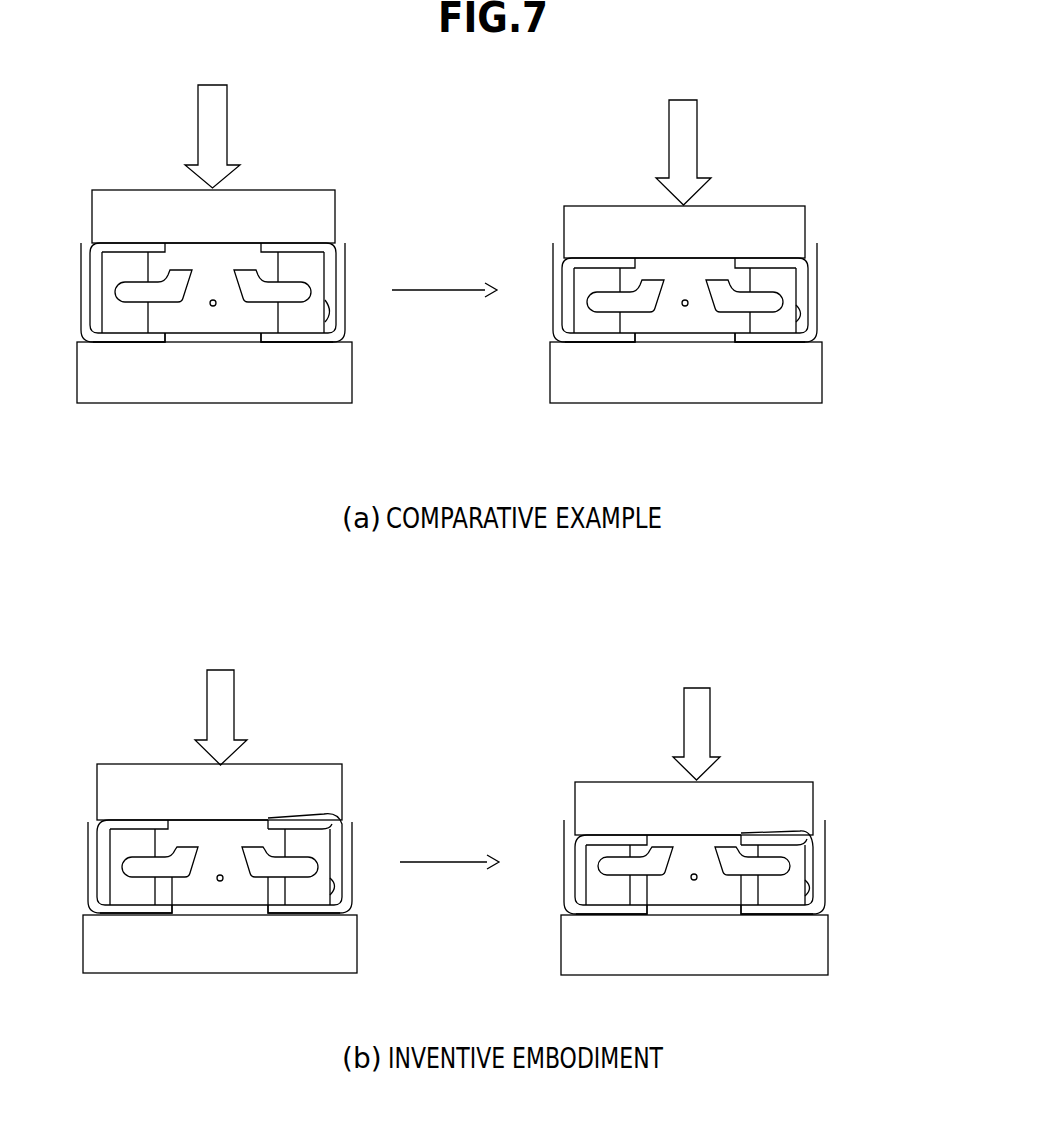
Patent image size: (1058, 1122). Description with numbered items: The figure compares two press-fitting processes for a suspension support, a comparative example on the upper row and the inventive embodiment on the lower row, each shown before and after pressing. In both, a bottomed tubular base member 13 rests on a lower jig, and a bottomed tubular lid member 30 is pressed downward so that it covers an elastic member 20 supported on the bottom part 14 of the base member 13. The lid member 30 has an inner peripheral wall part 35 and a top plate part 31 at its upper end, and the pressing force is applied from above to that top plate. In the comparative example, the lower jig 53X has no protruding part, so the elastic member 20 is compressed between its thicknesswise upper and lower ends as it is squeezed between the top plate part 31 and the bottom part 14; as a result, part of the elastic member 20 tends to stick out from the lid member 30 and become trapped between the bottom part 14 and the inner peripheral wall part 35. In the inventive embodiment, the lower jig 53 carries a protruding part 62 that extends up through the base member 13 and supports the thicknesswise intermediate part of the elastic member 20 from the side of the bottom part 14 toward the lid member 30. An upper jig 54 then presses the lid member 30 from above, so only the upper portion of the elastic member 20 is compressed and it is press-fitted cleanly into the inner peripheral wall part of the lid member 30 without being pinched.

The base member 13 is at (366, 245).
The bottom part 14 is at (297, 343).
The elastic member 20 is at (310, 317).
The lid member 30 is at (329, 223).
The top plate part 31 is at (270, 240).
The inner peripheral wall part 35 is at (332, 290).
The lower jig 53X is at (337, 387).
The lower jig 53 is at (342, 958).
The upper jig 54 is at (320, 770).
The protruding part 62 is at (250, 890).